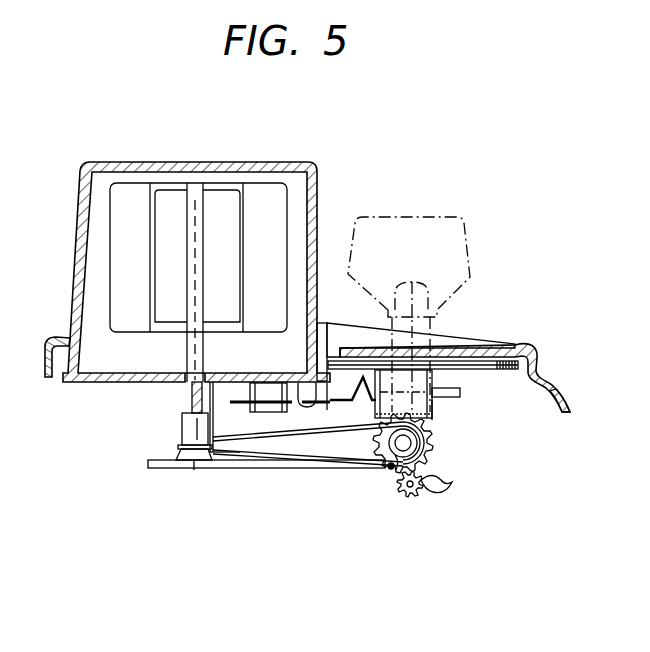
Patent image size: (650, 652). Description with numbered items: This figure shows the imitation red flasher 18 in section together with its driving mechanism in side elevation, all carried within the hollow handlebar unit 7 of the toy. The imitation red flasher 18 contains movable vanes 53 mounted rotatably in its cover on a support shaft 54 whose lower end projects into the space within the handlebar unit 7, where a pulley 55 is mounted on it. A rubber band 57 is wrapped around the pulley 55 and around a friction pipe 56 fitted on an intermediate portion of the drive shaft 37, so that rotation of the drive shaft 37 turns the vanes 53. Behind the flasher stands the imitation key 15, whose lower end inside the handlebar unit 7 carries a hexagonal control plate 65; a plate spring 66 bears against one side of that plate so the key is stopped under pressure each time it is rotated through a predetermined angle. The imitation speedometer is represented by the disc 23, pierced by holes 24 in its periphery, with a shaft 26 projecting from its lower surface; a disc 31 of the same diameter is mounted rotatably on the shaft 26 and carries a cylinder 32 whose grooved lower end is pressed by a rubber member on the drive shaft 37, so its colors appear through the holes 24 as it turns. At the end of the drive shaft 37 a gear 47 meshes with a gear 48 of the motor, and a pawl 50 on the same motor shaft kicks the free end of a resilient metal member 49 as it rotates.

The imitation red flasher 18 is at (317, 172).
The imitation key 15 is at (470, 224).
The movable vanes 53 is at (109, 238).
The holes 24 is at (355, 350).
The disc 23 is at (490, 352).
The handlebar unit 7 is at (562, 393).
The support shaft 54 is at (187, 352).
The plate spring 66 is at (207, 410).
The hexagonal control plate 65 is at (458, 393).
The shaft 26 is at (440, 413).
The disc 31 is at (512, 372).
The cylinder 32 is at (431, 422).
The pulley 55 is at (193, 462).
The rubber band 57 is at (313, 440).
The friction pipe 56 is at (388, 462).
The resilient metal member 49 is at (325, 470).
The gear 47 is at (431, 461).
The drive shaft 37 is at (393, 470).
The pawl 50 is at (431, 489).
The gear 48 is at (408, 497).